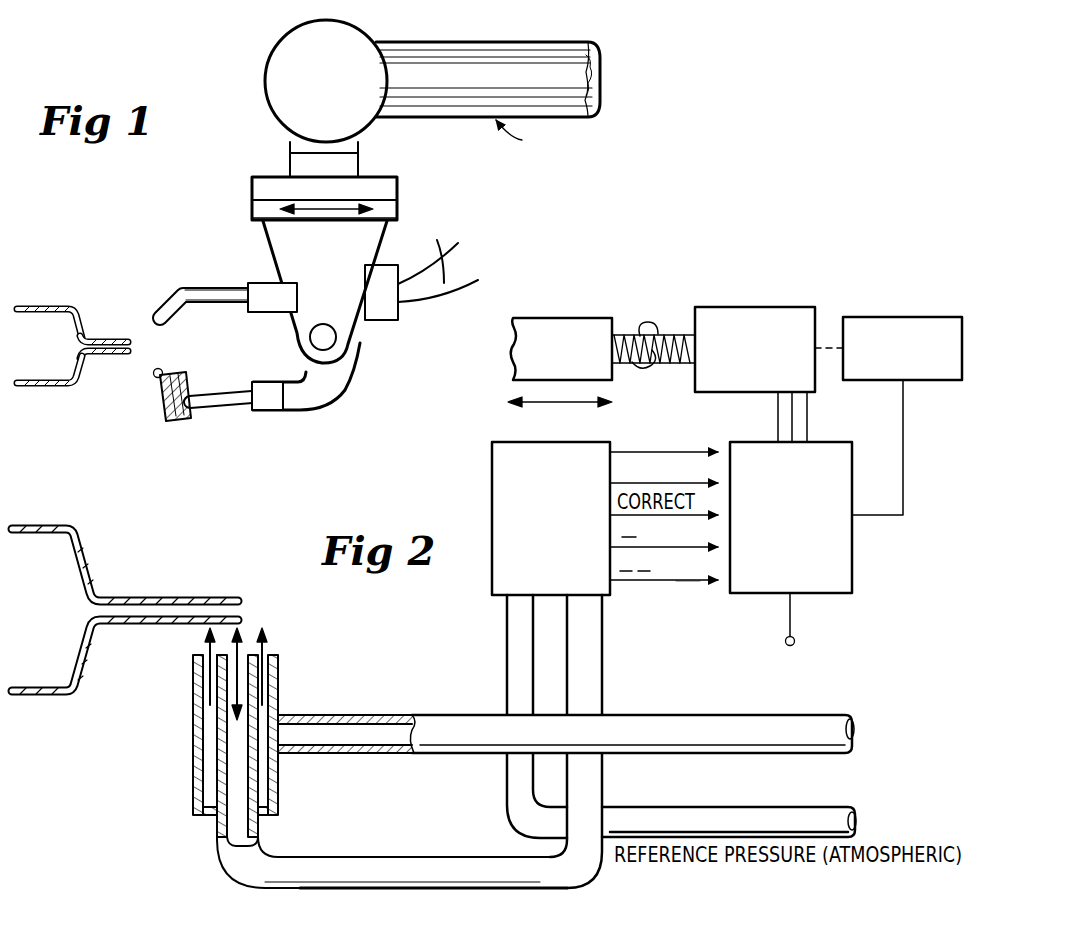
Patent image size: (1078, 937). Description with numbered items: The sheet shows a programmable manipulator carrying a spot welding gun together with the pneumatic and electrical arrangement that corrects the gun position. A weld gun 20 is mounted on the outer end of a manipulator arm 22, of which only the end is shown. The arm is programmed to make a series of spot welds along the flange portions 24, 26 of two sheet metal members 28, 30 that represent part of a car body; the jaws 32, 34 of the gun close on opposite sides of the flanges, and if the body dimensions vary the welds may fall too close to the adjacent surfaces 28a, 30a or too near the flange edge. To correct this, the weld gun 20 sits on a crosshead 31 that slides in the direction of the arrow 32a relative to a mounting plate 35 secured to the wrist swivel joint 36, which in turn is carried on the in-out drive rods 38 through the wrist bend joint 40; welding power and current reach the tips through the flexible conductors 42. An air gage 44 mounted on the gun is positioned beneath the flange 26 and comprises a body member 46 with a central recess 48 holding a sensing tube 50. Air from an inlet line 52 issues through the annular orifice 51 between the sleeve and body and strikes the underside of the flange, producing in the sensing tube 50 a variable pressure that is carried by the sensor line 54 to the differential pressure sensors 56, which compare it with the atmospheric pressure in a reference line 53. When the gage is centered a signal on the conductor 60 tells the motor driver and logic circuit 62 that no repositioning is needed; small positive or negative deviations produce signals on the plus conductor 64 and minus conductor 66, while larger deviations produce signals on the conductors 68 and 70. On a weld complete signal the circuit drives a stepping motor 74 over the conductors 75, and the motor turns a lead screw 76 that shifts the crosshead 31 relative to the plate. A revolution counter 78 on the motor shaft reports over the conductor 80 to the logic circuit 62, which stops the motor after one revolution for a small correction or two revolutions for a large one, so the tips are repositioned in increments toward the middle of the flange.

In FIG. 1, the weld gun 20 is at (358, 338).
In FIG. 1, the manipulator arm 22 is at (523, 140).
In FIG. 1, the flange portion 24 is at (120, 338).
In FIG. 2, the flange portion 24 is at (130, 596).
In FIG. 1, the flange portion 26 is at (118, 356).
In FIG. 2, the flange portion 26 is at (122, 626).
In FIG. 1, the sheet metal member 28 is at (36, 305).
In FIG. 1, the adjacent surface 28a is at (76, 312).
In FIG. 1, the sheet metal member 30 is at (44, 388).
In FIG. 1, the adjacent surface 30a is at (80, 370).
In FIG. 1, the crosshead 31 is at (397, 210).
In FIG. 2, the crosshead 31 is at (570, 316).
In FIG. 1, the jaw 32 is at (200, 289).
In FIG. 1, the arrow 32a is at (340, 206).
In FIG. 2, the arrow 32a is at (578, 402).
In FIG. 1, the jaw 34 is at (230, 410).
In FIG. 1, the mounting plate 35 is at (252, 192).
In FIG. 1, the wrist swivel joint 36 is at (290, 160).
In FIG. 1, the in-out drive rods 38 is at (512, 42).
In FIG. 1, the wrist bend joint 40 is at (266, 78).
In FIG. 1, the flexible conductors 42 is at (446, 262).
In FIG. 1, the air gage 44 is at (165, 420).
In FIG. 2, the air gage 44 is at (222, 751).
In FIG. 2, the body member 46 is at (278, 783).
In FIG. 2, the recess 48 is at (205, 748).
In FIG. 2, the sensing tube 50 is at (222, 714).
In FIG. 2, the annular orifice 51 is at (262, 656).
In FIG. 2, the inlet line 52 is at (308, 714).
In FIG. 2, the reference line 53 is at (507, 634).
In FIG. 2, the sensor line 54 is at (330, 856).
In FIG. 2, the differential pressure sensors 56 is at (490, 450).
In FIG. 2, the conductor 60 is at (674, 516).
In FIG. 2, the motor driver and logic circuit 62 is at (852, 544).
In FIG. 2, the plus conductor 64 is at (670, 483).
In FIG. 2, the minus conductor 66 is at (672, 548).
In FIG. 2, the conductor 68 is at (676, 452).
In FIG. 2, the conductor 70 is at (676, 582).
In FIG. 2, the stepping motor 74 is at (746, 307).
In FIG. 2, the conductors 75 is at (780, 422).
In FIG. 2, the lead screw 76 is at (656, 332).
In FIG. 2, the revolution counter 78 is at (888, 317).
In FIG. 2, the conductor 80 is at (904, 468).